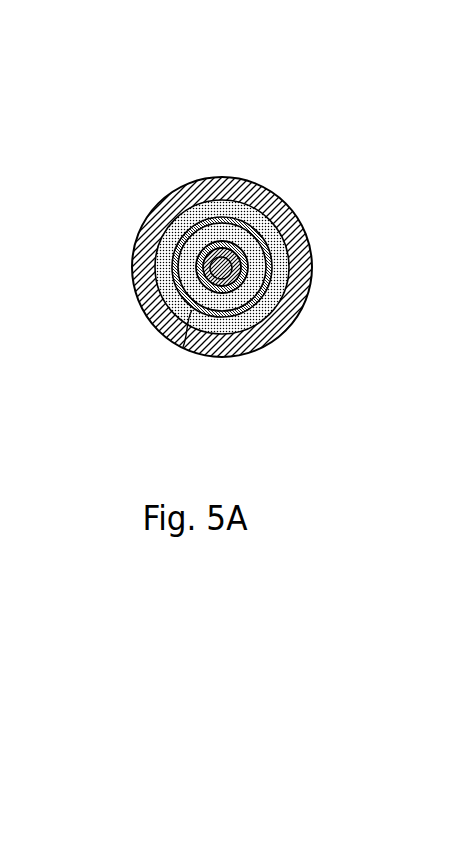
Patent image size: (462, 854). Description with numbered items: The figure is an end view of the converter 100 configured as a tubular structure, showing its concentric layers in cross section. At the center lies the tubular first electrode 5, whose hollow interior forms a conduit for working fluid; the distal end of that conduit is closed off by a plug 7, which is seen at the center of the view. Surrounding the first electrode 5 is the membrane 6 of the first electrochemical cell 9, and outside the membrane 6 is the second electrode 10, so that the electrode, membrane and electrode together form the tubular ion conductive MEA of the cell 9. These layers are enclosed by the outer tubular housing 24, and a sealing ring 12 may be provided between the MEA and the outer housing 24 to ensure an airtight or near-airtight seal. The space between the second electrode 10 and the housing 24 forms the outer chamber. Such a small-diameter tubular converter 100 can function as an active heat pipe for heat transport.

The converter 100 is at (310, 187).
The sealing ring 12 is at (202, 203).
The first electrochemical cell 9 is at (165, 277).
The outer tubular housing 24 is at (283, 293).
The first electrode 5 is at (167, 292).
The plug 7 is at (232, 307).
The second electrode 10 is at (217, 317).
The membrane 6 is at (183, 347).